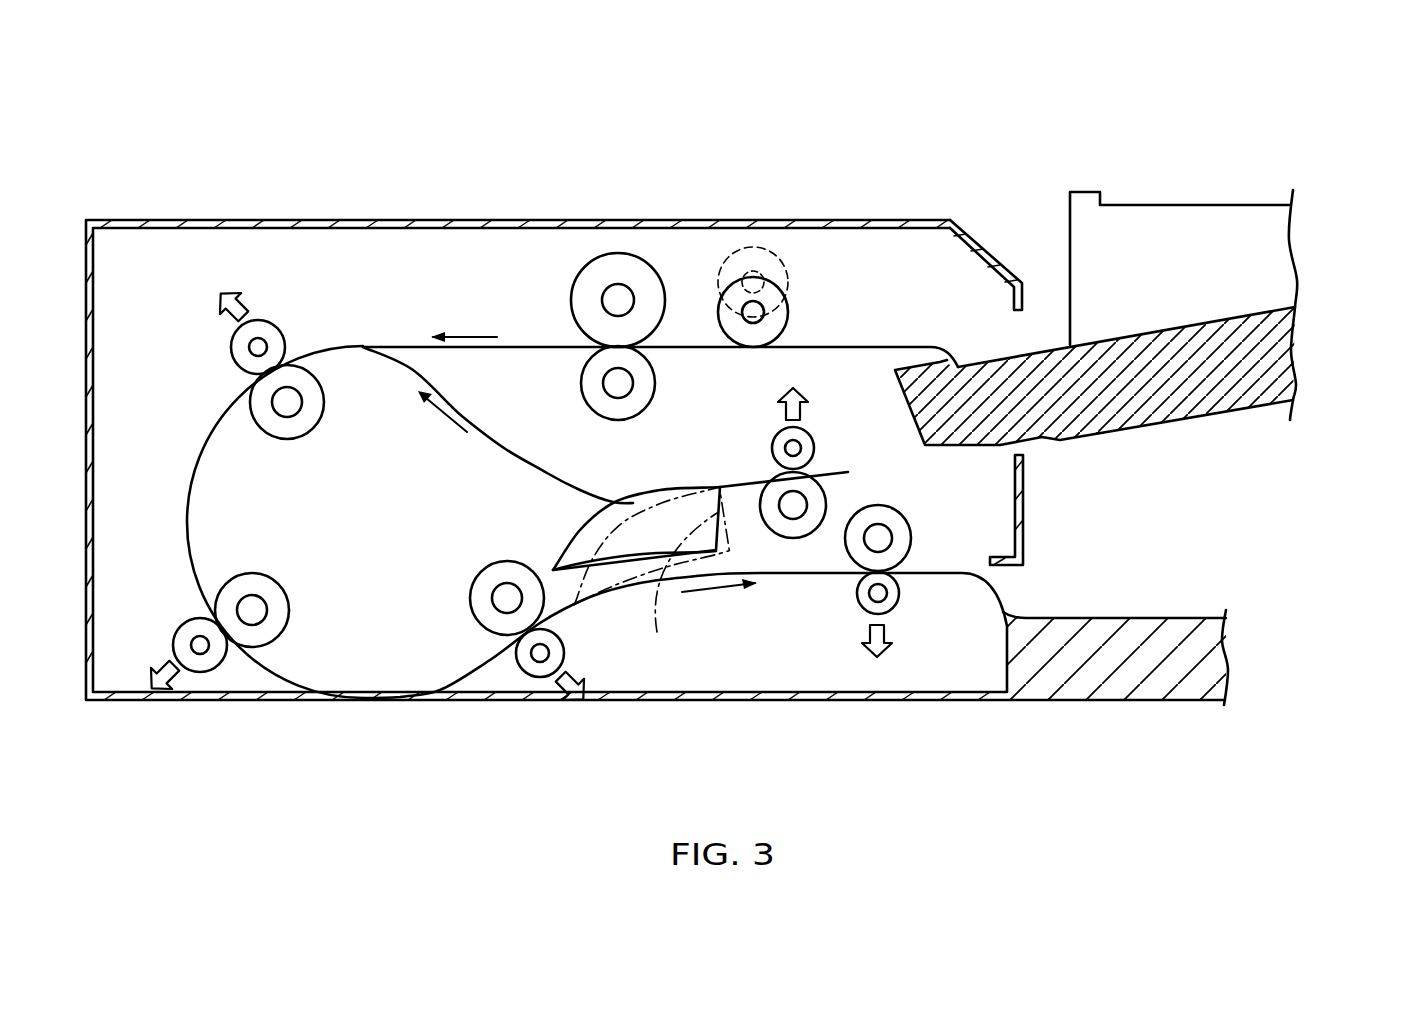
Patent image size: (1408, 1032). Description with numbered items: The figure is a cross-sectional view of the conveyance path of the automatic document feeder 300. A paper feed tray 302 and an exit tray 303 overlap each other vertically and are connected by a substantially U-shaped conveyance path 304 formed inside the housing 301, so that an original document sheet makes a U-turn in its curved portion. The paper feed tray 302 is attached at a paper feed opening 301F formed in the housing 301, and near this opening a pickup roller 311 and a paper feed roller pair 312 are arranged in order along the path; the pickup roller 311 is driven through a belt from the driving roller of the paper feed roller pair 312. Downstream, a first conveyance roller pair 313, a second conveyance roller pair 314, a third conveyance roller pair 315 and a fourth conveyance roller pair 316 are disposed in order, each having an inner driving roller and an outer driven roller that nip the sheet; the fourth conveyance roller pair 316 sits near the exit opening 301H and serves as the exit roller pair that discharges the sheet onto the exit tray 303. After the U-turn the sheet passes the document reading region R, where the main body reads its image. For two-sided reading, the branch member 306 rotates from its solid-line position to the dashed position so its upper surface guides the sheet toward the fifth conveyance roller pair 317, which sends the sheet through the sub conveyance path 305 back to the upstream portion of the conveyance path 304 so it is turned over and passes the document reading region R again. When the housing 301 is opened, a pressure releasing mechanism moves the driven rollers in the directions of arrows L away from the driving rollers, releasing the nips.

The automatic document feeder 300 is at (998, 142).
The housing 301 is at (892, 220).
The paper feed opening 301F is at (1020, 333).
The exit opening 301H is at (988, 575).
The paper feed tray 302 is at (1302, 365).
The exit tray 303 is at (1167, 615).
The conveyance path 304 is at (512, 345).
The sub conveyance path 305 is at (505, 448).
The branch member 306 is at (607, 560).
The pickup roller 311 is at (713, 300).
The paper feed roller pair 312 is at (612, 263).
The first conveyance roller pair 313 is at (273, 333).
The second conveyance roller pair 314 is at (313, 635).
The third conveyance roller pair 315 is at (477, 593).
The fourth conveyance roller pair 316 is at (875, 512).
The fifth conveyance roller pair 317 is at (809, 433).
The document reading region R is at (370, 723).
The arrow L is at (222, 297).